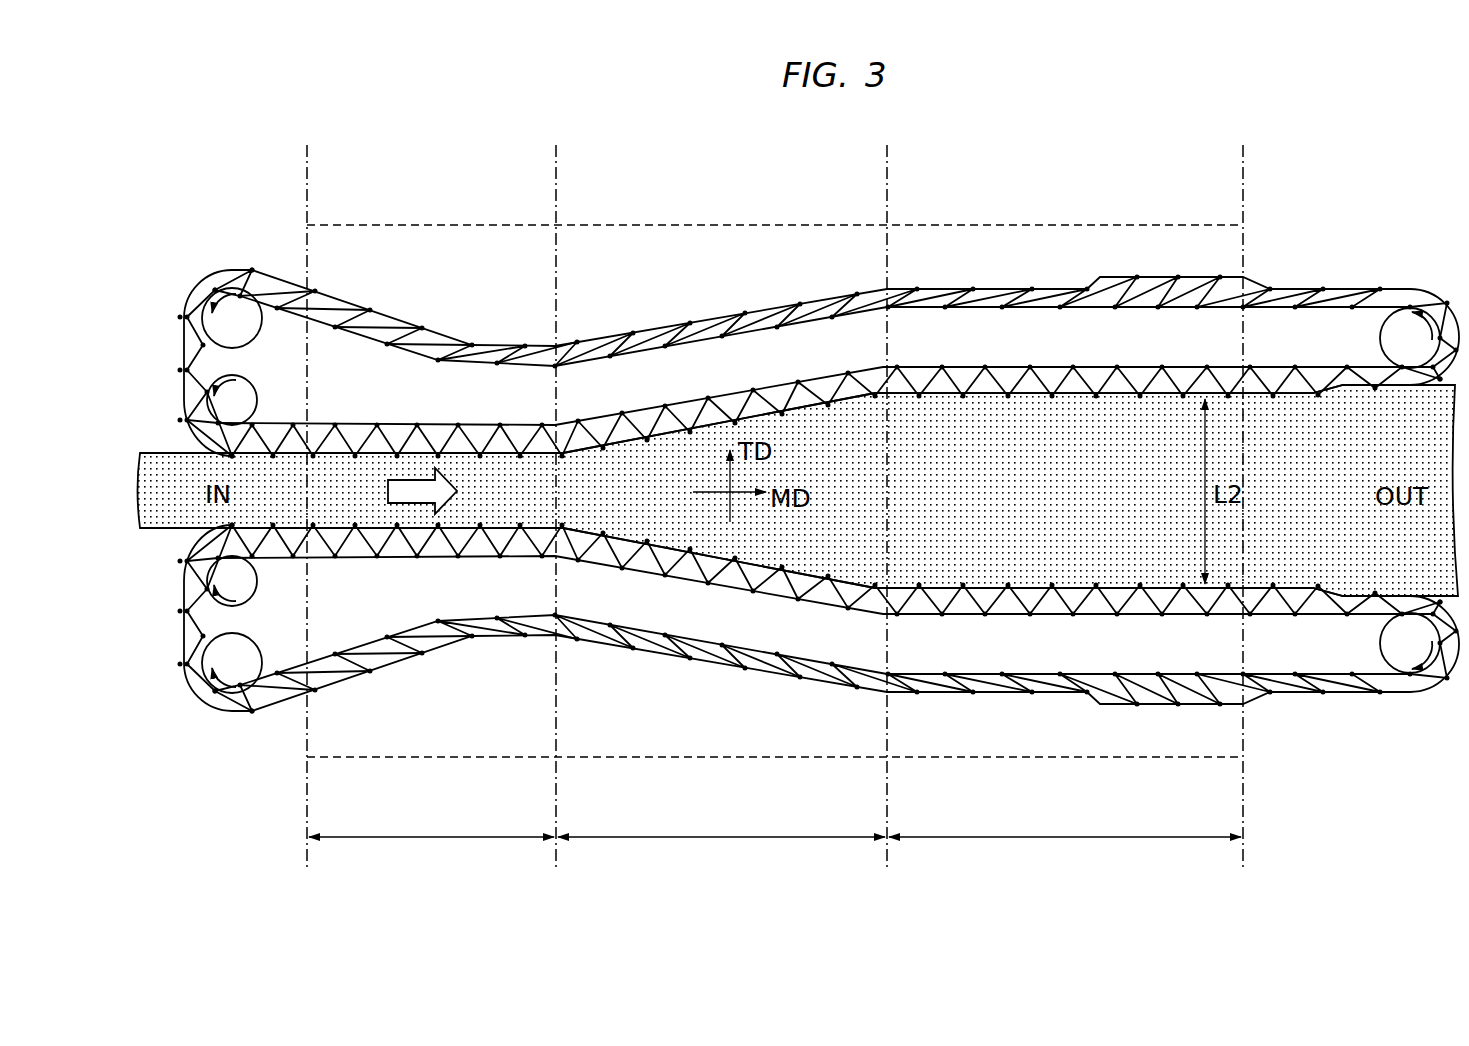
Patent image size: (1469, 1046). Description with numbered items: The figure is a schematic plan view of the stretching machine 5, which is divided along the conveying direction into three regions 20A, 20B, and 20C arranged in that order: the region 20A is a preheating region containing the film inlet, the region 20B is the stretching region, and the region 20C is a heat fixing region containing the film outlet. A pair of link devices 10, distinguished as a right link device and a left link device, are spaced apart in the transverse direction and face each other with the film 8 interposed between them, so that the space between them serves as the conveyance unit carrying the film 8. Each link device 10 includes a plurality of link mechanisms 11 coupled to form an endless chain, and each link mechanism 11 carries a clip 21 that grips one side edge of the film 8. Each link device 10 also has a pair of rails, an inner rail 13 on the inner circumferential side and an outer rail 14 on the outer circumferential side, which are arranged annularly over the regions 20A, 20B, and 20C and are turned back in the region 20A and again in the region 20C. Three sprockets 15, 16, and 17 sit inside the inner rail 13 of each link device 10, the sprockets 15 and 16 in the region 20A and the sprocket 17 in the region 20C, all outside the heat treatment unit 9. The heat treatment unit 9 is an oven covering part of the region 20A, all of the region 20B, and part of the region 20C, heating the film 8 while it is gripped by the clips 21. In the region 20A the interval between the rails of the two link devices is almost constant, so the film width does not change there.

The stretching machine 5 is at (1335, 250).
The film 8 is at (140, 506).
The heat treatment unit 9 is at (390, 224).
The link device 10 is at (778, 492).
The link mechanism 11 is at (390, 424).
The rail 13 is at (633, 410).
The rail 14 is at (946, 288).
The sprocket 15 is at (240, 388).
The sprocket 16 is at (237, 306).
The sprocket 17 is at (1396, 320).
The region 20A is at (431, 821).
The region 20B is at (721, 821).
The region 20C is at (1065, 821).
The clip 21 is at (232, 455).